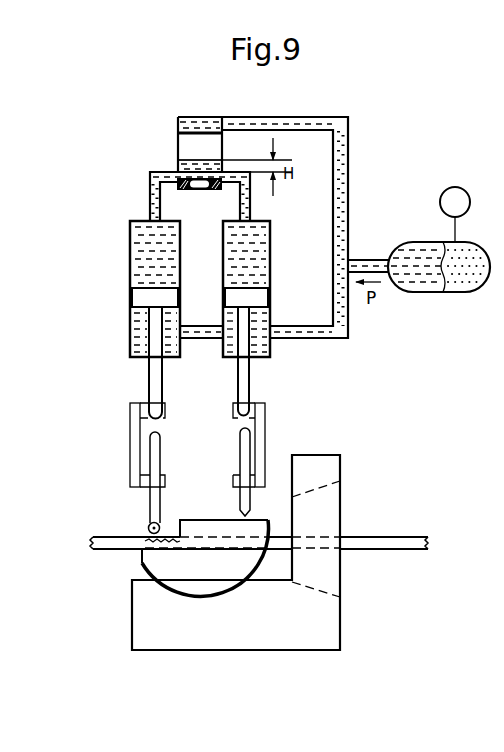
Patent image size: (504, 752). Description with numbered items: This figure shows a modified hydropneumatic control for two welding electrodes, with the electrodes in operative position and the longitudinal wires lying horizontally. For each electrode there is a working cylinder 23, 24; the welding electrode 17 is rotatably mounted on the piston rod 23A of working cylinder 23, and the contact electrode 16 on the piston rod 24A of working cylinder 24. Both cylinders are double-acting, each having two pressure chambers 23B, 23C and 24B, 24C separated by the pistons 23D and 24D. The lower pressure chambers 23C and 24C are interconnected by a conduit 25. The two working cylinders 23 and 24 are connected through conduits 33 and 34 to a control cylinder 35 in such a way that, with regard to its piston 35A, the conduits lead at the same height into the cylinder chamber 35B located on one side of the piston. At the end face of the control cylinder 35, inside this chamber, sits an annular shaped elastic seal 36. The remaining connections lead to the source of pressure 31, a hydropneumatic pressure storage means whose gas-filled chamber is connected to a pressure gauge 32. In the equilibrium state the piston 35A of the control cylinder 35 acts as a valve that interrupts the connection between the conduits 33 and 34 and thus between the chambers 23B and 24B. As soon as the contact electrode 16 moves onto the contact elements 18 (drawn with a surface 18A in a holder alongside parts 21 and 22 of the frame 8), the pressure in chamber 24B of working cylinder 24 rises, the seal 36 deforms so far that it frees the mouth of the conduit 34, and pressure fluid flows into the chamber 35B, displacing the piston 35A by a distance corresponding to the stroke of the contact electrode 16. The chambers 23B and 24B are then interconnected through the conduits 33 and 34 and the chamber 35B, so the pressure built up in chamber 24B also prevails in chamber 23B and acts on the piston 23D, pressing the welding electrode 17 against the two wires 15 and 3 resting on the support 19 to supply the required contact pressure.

The wire 3 is at (90, 546).
The frame 8 is at (349, 557).
The wire 15 is at (148, 527).
The contact electrode 16 is at (249, 512).
The welding electrode 17 is at (149, 501).
The contact elements 18 is at (272, 530).
The top surface of holder 18A is at (210, 519).
The support 19 is at (146, 548).
The half-disc 21 is at (193, 578).
The base 22 is at (325, 622).
The working cylinder 23 is at (128, 241).
The piston rod 23A is at (155, 374).
The pressure chamber 23B is at (140, 263).
The pressure chamber 23C is at (140, 344).
The piston 23D is at (140, 297).
The working cylinder 24 is at (279, 235).
The piston rod 24A is at (249, 382).
The pressure chamber 24B is at (263, 260).
The pressure chamber 24C is at (264, 346).
The piston 24D is at (262, 297).
The conduit 25 is at (198, 334).
The source of pressure 31 is at (454, 294).
The pressure gauge 32 is at (455, 187).
The conduit 33 is at (150, 176).
The conduit 34 is at (252, 209).
The control cylinder 35 is at (200, 116).
The piston 35A is at (203, 142).
The cylinder chamber 35B is at (178, 163).
The annular shaped elastic seal 36 is at (182, 189).